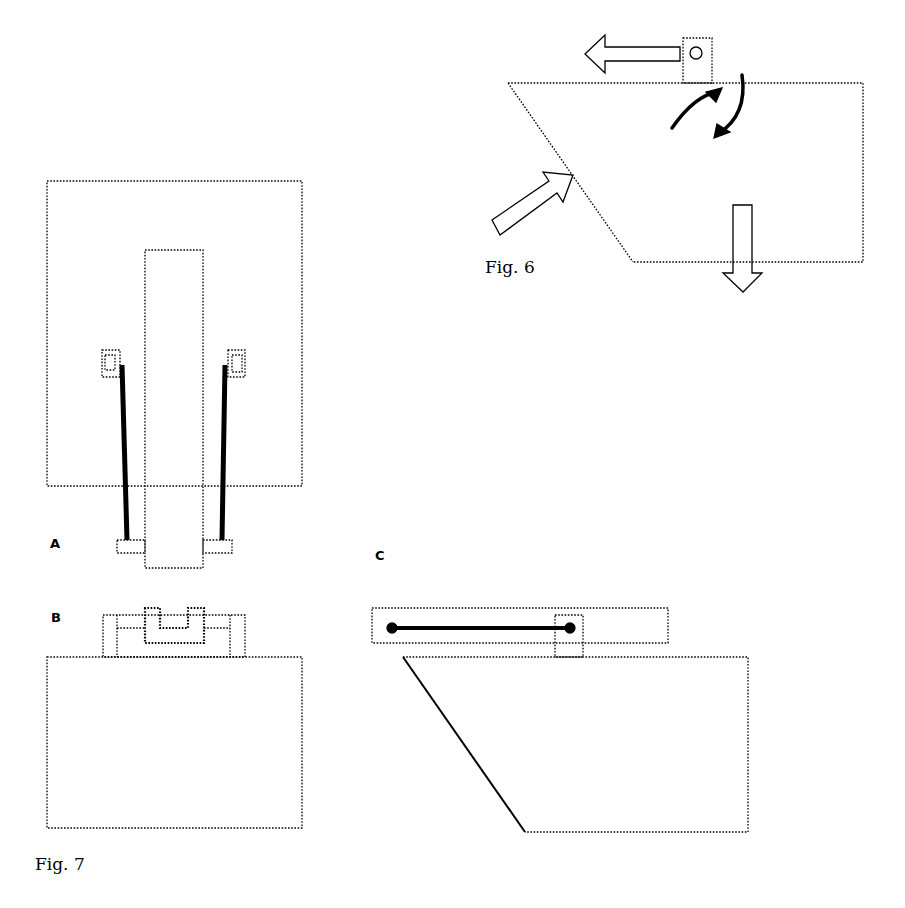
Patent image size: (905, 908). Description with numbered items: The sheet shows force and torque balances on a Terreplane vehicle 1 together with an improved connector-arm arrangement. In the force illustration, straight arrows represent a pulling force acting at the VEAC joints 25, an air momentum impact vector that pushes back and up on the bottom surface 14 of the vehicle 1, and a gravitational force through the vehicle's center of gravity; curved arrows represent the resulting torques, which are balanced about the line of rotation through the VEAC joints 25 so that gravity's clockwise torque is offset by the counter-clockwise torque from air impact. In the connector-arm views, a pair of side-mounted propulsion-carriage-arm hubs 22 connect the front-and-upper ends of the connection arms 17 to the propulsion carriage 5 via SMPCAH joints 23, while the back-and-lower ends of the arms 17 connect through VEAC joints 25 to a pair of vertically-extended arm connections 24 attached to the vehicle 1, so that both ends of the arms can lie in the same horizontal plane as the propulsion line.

In FIG. 6, the vehicle 1 is at (685, 172).
In FIG. 7, the vehicle 1 is at (752, 640).
In FIG. 7, the propulsion carriage 5 is at (755, 580).
In FIG. 6, the bottom surface 14 is at (545, 137).
In FIG. 7, the connection arms 17 is at (228, 456).
In FIG. 7, the side-mounted propulsion-carriage-arm hubs 22 is at (232, 540).
In FIG. 7, the SMPCAH joints 23 is at (395, 624).
In FIG. 6, the vertically-extended arm connections 24 is at (713, 69).
In FIG. 7, the vertically-extended arm connections 24 is at (236, 350).
In FIG. 6, the VEAC joints 25 is at (712, 46).
In FIG. 7, the VEAC joints 25 is at (242, 368).